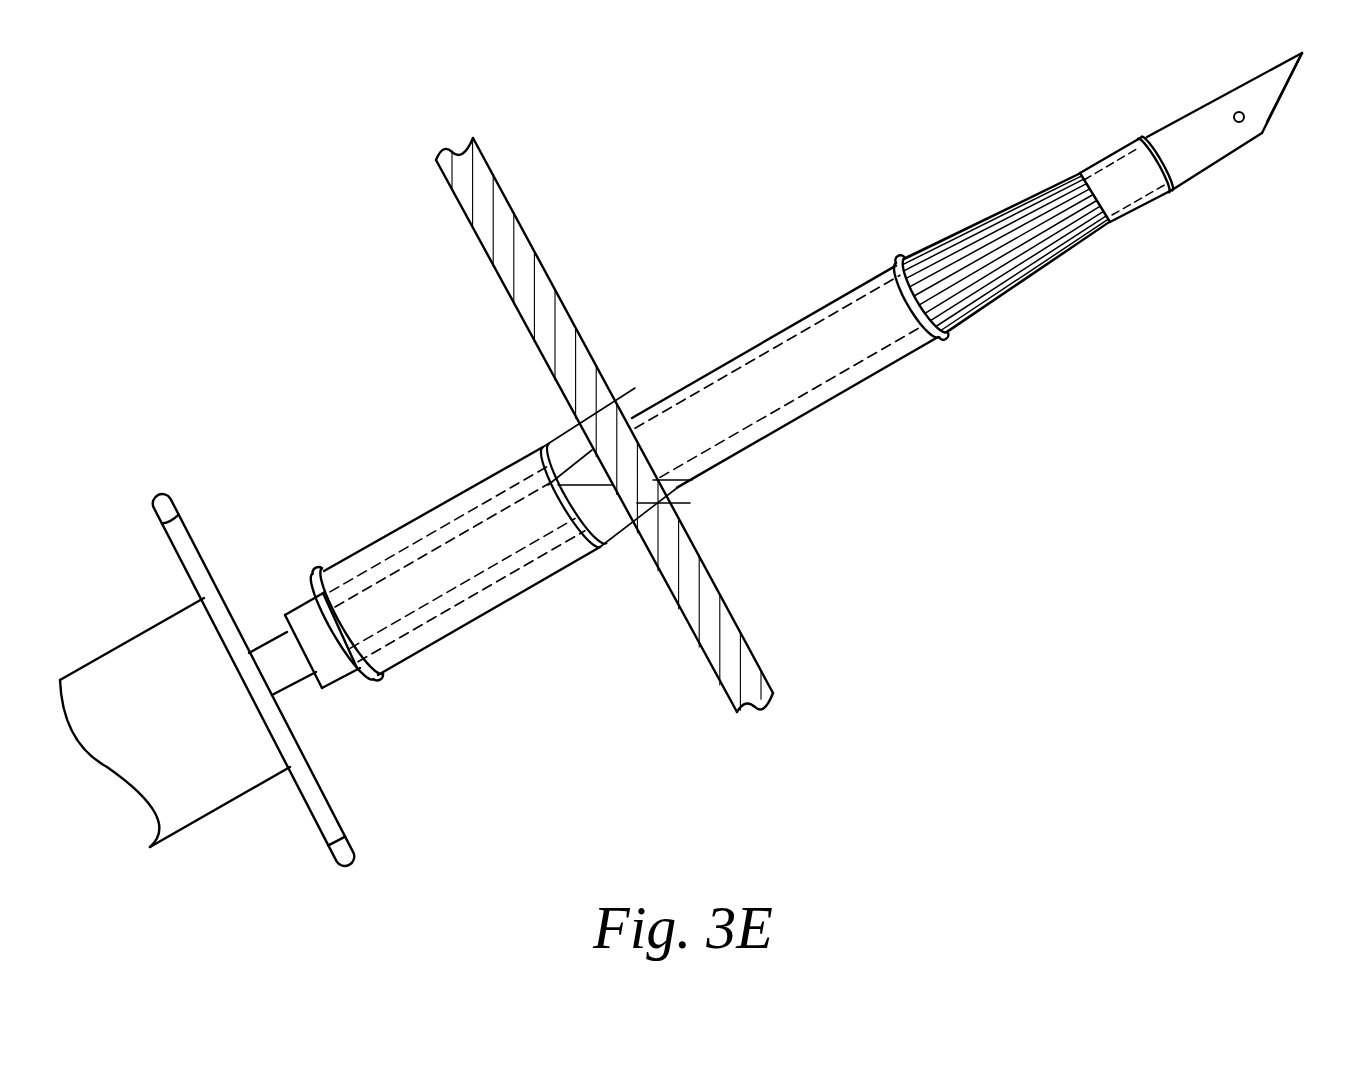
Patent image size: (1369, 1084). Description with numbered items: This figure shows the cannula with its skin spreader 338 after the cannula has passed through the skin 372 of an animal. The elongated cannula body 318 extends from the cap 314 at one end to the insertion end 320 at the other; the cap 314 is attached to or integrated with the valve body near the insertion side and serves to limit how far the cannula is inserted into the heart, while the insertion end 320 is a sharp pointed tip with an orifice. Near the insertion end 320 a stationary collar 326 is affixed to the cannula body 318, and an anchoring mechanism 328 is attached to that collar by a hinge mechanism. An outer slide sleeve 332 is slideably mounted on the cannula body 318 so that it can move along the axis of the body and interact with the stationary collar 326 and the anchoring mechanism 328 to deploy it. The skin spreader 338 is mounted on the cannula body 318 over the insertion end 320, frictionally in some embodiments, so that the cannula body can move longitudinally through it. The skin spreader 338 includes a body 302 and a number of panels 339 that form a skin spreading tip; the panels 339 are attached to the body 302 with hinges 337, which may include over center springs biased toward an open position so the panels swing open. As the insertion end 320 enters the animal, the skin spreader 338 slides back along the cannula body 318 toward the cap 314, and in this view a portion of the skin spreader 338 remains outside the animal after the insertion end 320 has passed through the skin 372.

The body 302 is at (438, 508).
The cap 314 is at (188, 542).
The cannula body 318 is at (832, 318).
The insertion end 320 is at (1265, 165).
The stationary collar 326 is at (1093, 157).
The anchoring mechanism 328 is at (950, 235).
The outer slide sleeve 332 is at (733, 362).
The hinges 337 is at (600, 545).
The skin spreader 338 is at (475, 447).
The panels 339 is at (650, 513).
The skin 372 is at (523, 238).